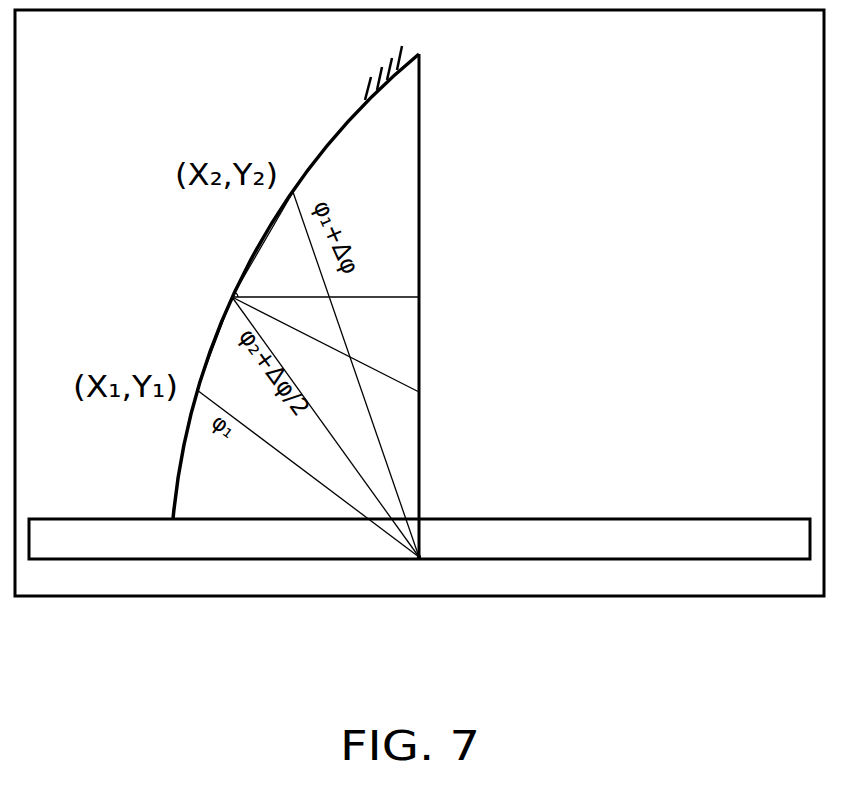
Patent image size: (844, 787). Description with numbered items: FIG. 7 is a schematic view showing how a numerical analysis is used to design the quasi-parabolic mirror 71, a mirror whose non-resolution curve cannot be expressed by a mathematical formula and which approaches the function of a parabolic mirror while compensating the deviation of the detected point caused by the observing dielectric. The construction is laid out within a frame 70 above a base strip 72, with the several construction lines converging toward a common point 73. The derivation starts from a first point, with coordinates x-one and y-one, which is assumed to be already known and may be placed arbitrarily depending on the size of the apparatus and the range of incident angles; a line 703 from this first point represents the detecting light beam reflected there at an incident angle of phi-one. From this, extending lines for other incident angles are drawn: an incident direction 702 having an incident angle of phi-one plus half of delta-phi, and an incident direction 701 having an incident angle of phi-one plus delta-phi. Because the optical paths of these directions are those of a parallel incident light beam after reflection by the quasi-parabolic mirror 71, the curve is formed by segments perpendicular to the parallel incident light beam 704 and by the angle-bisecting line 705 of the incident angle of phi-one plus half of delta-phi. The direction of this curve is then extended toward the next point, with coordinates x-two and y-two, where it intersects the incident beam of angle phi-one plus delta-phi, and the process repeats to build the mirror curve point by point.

The coordinate frame 70 is at (419, 324).
The quasi-parabolic mirror 71 is at (296, 302).
The base line segment 72 is at (419, 516).
The reference point 73 is at (404, 576).
The incident direction 701 is at (308, 374).
The incident direction 702 is at (325, 427).
The line to first point 703 is at (308, 473).
The parallel incident light beam 704 is at (357, 301).
The angle-bisecting line 705 is at (356, 353).